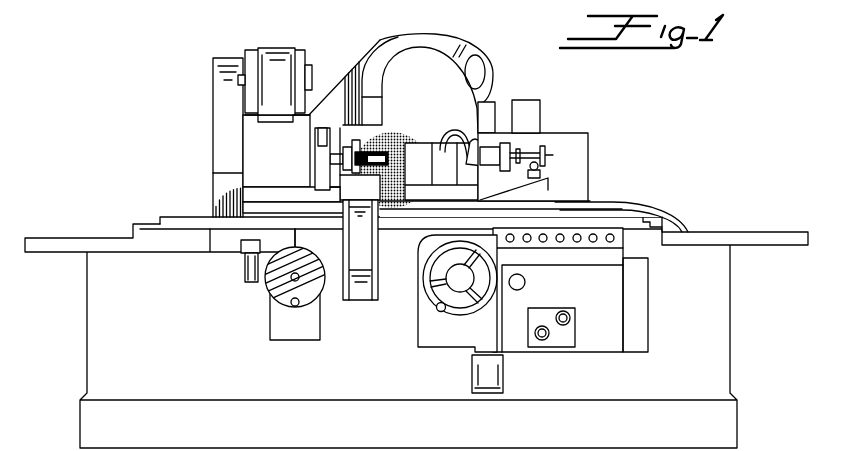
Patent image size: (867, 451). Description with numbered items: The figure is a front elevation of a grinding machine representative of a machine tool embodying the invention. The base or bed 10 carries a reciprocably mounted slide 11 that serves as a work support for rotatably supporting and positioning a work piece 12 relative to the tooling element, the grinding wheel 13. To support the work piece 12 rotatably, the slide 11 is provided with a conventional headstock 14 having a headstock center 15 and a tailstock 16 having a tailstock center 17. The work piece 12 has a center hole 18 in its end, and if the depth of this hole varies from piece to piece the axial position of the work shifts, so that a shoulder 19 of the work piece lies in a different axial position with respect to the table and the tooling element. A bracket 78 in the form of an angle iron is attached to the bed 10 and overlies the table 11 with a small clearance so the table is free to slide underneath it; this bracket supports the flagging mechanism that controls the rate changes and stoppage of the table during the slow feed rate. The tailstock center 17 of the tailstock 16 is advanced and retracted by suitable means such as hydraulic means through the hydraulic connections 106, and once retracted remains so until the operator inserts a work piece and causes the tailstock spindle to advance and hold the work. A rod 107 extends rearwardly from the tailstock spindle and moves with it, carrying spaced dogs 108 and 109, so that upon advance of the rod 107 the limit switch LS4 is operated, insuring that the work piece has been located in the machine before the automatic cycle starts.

The base 10 is at (92, 321).
The slide 11 is at (160, 221).
The work piece 12 is at (352, 172).
The grinding wheel 13 is at (393, 134).
The headstock 14 is at (258, 148).
The headstock center 15 is at (323, 158).
The tailstock 16 is at (428, 160).
The tailstock center 17 is at (400, 160).
The center hole 18 is at (333, 148).
The shoulder 19 is at (379, 137).
The bracket 78 is at (379, 263).
The hydraulic connections 106 is at (613, 202).
The rod 107 is at (547, 157).
The dog 108 is at (523, 148).
The dog 109 is at (541, 150).
The limit switch LS4 is at (540, 176).